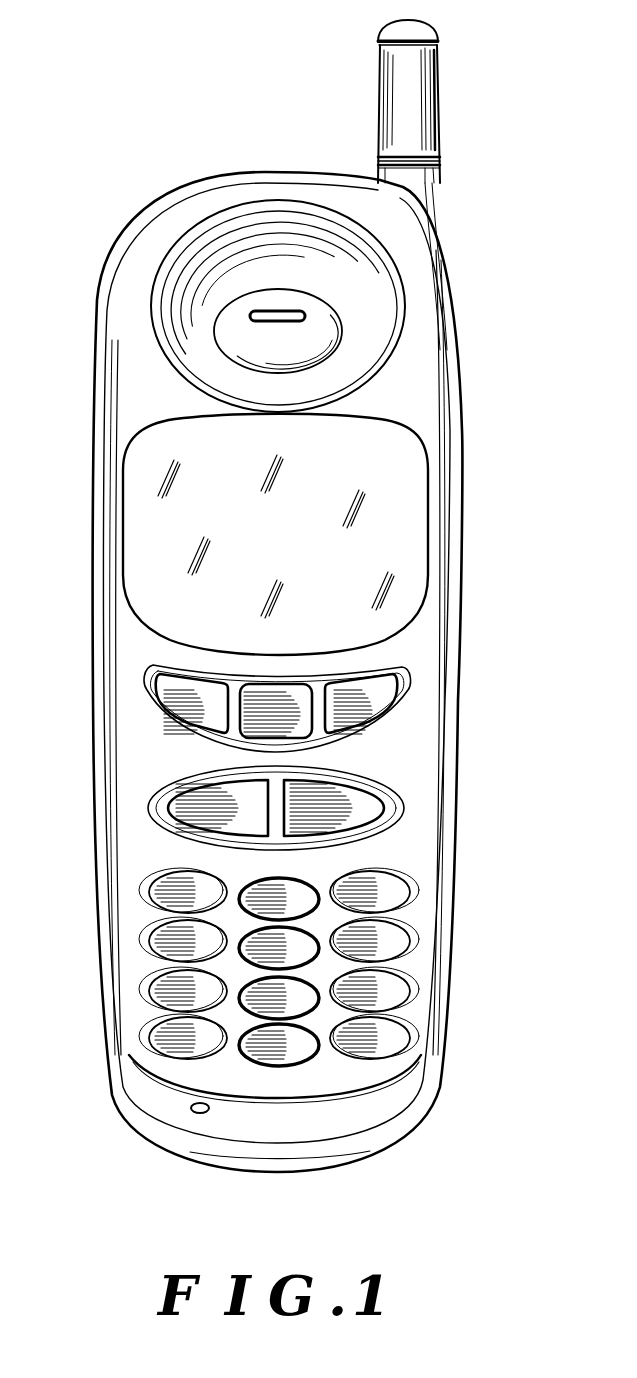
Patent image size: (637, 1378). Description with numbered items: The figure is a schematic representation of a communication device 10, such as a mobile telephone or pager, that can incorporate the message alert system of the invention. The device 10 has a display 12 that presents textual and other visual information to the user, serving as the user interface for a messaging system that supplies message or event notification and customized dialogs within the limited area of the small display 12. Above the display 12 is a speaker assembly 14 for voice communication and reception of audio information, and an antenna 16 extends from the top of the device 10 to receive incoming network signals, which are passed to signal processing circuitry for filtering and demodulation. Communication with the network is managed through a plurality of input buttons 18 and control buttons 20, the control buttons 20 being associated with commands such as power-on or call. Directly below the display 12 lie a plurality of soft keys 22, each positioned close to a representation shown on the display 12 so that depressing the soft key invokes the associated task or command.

The communication device 10 is at (472, 417).
The display 12 is at (412, 528).
The speaker assembly 14 is at (382, 307).
The antenna 16 is at (439, 109).
The input buttons 18 is at (380, 927).
The control buttons 20 is at (178, 806).
The soft keys 22 is at (166, 693).